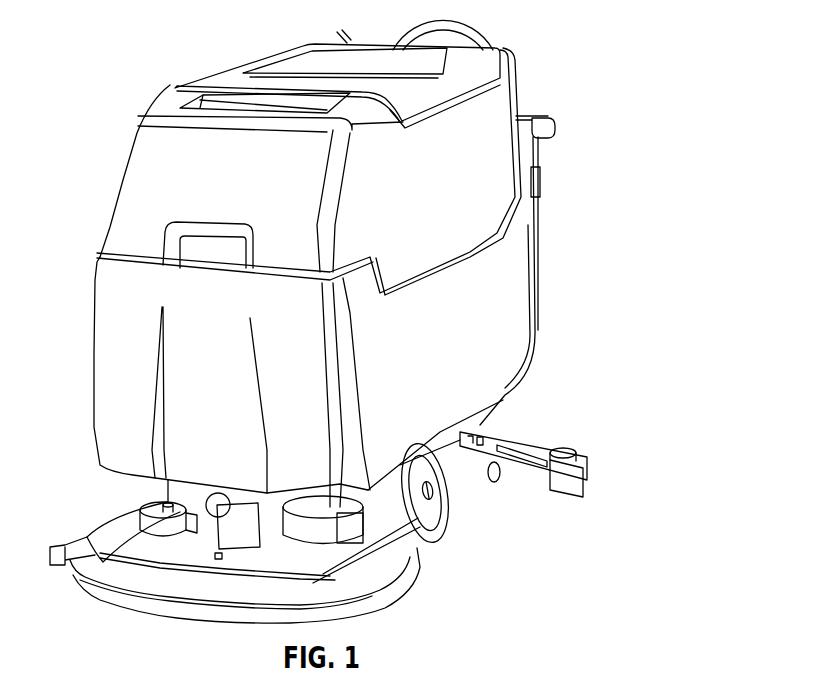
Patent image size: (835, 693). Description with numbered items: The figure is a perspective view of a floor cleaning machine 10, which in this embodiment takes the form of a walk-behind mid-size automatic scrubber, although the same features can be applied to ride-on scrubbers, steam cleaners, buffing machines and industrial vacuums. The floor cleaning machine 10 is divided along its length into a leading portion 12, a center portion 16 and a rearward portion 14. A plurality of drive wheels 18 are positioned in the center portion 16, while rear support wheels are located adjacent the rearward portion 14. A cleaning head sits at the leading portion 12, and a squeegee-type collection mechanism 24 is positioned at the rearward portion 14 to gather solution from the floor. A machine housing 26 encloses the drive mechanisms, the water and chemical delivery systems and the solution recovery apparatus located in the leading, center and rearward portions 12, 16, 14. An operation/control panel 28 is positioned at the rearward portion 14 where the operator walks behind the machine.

The floor cleaning machine 10 is at (623, 100).
The leading portion 12 is at (105, 337).
The rearward portion 14 is at (537, 245).
The center portion 16 is at (287, 33).
The drive wheels 18 is at (443, 513).
The squeegee-type collection mechanism 24 is at (567, 447).
The machine housing 26 is at (128, 143).
The operation/control panel 28 is at (470, 33).